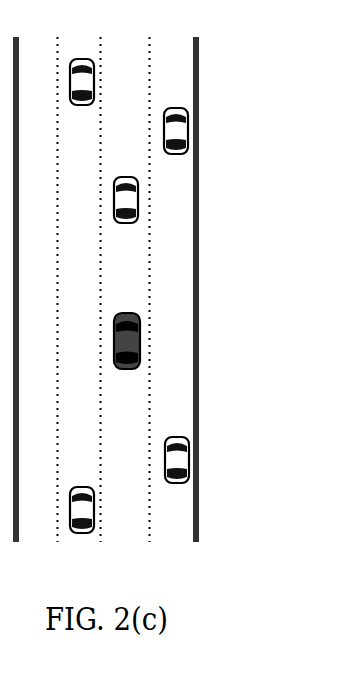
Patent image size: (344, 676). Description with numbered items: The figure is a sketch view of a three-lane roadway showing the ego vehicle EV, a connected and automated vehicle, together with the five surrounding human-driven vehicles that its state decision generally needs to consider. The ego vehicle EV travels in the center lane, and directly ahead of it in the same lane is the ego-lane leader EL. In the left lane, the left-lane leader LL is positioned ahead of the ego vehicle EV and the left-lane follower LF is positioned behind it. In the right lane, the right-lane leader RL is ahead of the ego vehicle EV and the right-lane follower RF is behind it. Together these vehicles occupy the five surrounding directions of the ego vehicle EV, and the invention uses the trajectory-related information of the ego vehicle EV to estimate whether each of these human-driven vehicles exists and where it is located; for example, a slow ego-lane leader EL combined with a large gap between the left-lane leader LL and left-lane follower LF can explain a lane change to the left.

The left-lane leader LL is at (63, 71).
The right-lane leader RL is at (206, 126).
The ego-lane leader EL is at (148, 200).
The ego vehicle EV is at (123, 322).
The left-lane follower LF is at (70, 485).
The right-lane follower RF is at (203, 460).